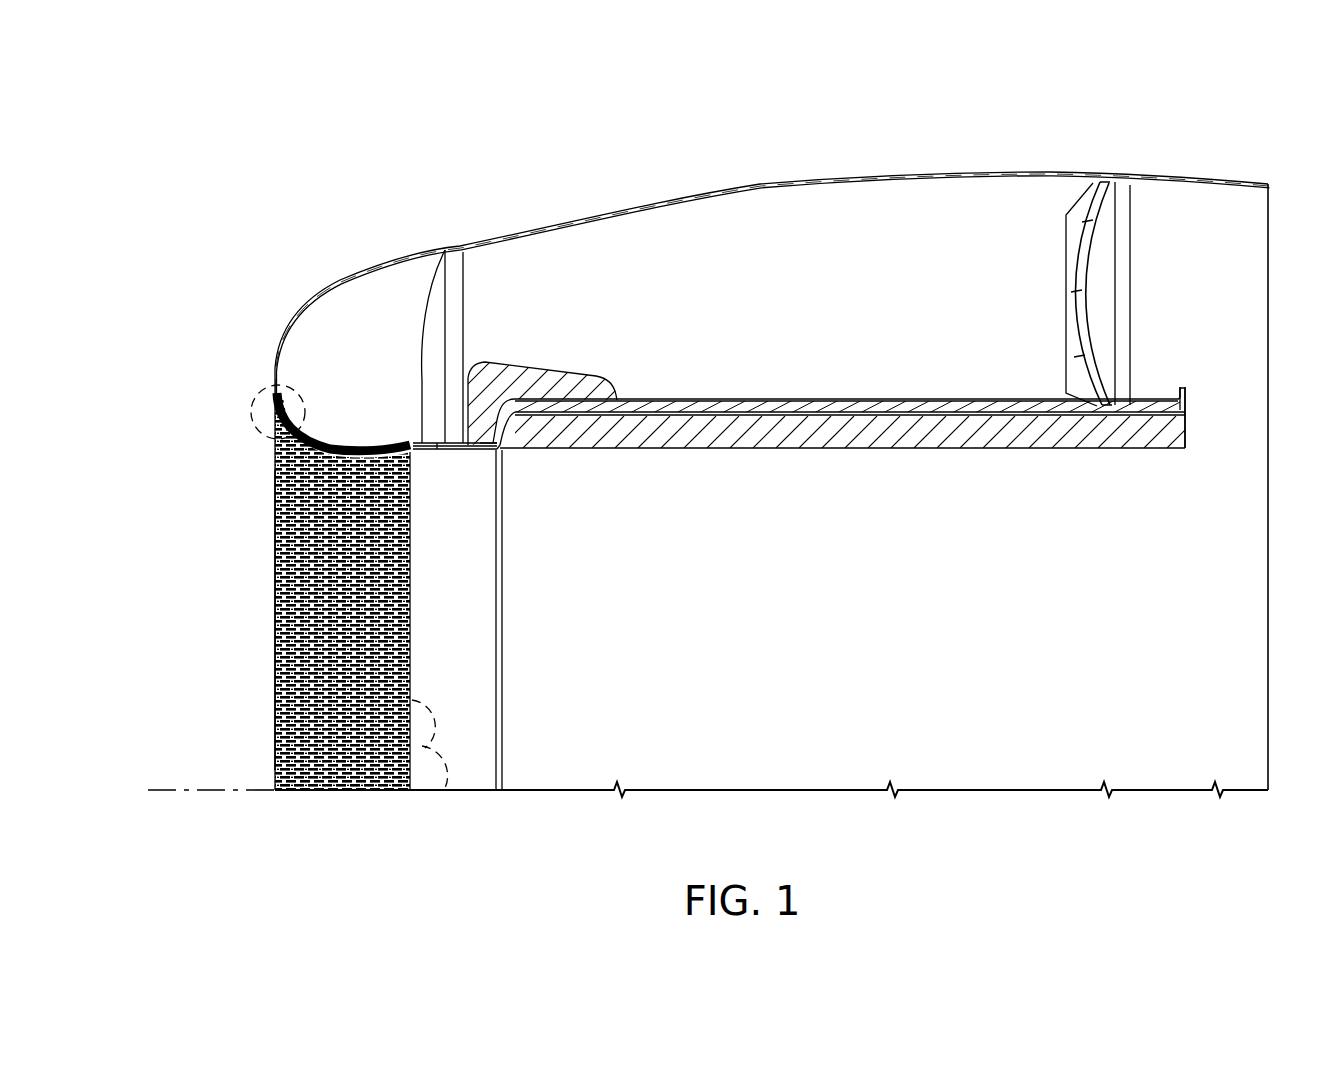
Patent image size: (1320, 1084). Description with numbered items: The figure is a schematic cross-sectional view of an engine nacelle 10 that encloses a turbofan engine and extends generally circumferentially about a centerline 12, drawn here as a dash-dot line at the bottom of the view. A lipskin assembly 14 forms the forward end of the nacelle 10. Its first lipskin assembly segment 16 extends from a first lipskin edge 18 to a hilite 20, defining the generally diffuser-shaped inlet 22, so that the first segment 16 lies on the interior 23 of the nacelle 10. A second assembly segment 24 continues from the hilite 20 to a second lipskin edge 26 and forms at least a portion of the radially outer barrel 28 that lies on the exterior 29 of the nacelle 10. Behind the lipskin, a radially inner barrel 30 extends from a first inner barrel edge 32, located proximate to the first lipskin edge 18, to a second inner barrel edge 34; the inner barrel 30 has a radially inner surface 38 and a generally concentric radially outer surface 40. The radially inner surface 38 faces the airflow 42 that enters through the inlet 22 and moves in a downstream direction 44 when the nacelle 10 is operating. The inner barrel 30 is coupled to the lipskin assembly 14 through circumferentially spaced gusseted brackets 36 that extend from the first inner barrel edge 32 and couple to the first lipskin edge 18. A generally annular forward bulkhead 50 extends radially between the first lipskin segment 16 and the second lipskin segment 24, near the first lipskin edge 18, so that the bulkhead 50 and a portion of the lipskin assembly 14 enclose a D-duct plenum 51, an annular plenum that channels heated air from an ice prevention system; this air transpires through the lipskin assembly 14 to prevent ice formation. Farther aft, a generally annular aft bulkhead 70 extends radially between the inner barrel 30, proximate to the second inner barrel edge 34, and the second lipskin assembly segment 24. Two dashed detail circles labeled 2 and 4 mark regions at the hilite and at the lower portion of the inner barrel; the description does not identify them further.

The nacelle 10 is at (402, 137).
The centerline 12 is at (172, 795).
The lipskin assembly 14 is at (282, 494).
The first lipskin assembly segment 16 is at (415, 452).
The first lipskin edge 18 is at (456, 456).
The hilite 20 is at (276, 392).
The inlet 22 is at (262, 600).
The interior 23 is at (612, 488).
The second assembly segment 24 is at (648, 200).
The second lipskin edge 26 is at (1262, 170).
The radially outer barrel 28 is at (830, 178).
The exterior 29 is at (921, 157).
The radially inner barrel 30 is at (685, 450).
The first inner barrel edge 32 is at (488, 456).
The second inner barrel edge 34 is at (1175, 456).
The gusseted brackets 36 is at (525, 368).
The radially inner surface 38 is at (903, 450).
The radially outer surface 40 is at (785, 398).
The airflow 42 is at (872, 553).
The downstream direction 44 is at (722, 668).
The forward bulkhead 50 is at (455, 268).
The D-duct plenum 51 is at (345, 368).
The aft bulkhead 70 is at (1080, 208).
The detail region of inlet lip 2 is at (252, 423).
The detail region of panel 4 is at (443, 792).